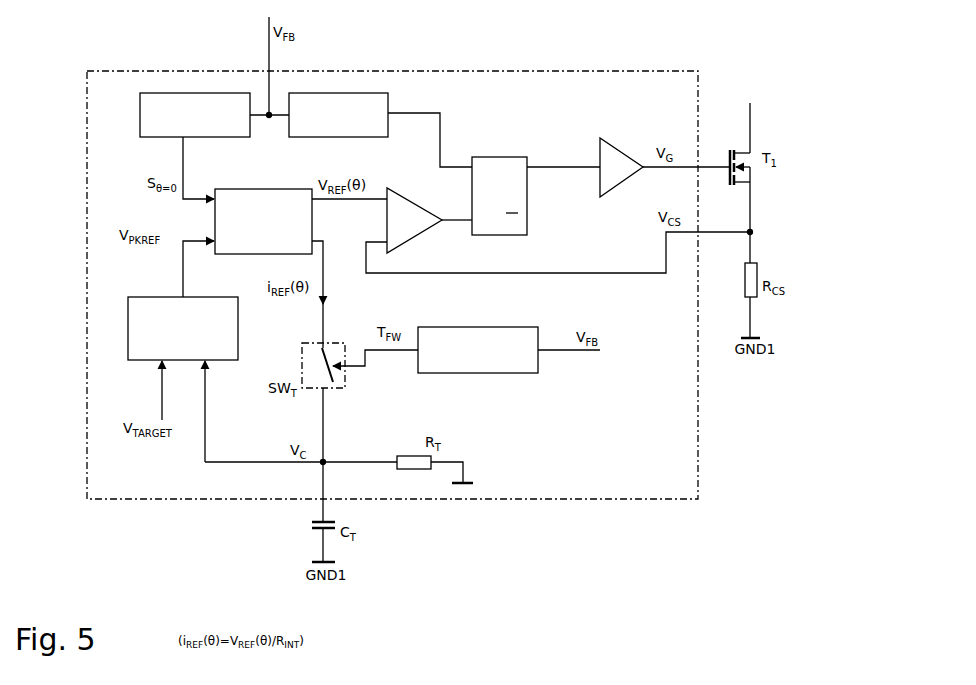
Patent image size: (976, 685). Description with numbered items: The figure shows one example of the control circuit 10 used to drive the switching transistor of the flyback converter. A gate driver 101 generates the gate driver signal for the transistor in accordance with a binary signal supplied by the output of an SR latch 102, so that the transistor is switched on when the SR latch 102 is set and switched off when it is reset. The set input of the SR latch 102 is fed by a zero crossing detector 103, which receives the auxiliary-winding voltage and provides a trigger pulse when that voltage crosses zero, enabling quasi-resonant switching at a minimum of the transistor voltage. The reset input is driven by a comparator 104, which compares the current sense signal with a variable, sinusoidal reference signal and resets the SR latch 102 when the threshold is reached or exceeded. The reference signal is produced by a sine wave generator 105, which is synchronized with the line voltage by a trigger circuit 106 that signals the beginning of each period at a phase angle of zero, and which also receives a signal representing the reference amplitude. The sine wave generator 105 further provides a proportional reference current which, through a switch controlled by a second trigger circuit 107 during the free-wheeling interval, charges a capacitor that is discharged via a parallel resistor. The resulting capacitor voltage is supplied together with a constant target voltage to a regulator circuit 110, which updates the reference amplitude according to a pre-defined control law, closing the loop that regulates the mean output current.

The control circuit 10 is at (392, 276).
The gate driver 101 is at (611, 149).
The SR latch 102 is at (510, 157).
The zero crossing detector 103 is at (338, 115).
The comparator 104 is at (422, 235).
The sine wave generator 105 is at (270, 189).
The trigger circuit 106 is at (195, 115).
The trigger circuit 107 is at (478, 350).
The regulator circuit 110 is at (183, 328).